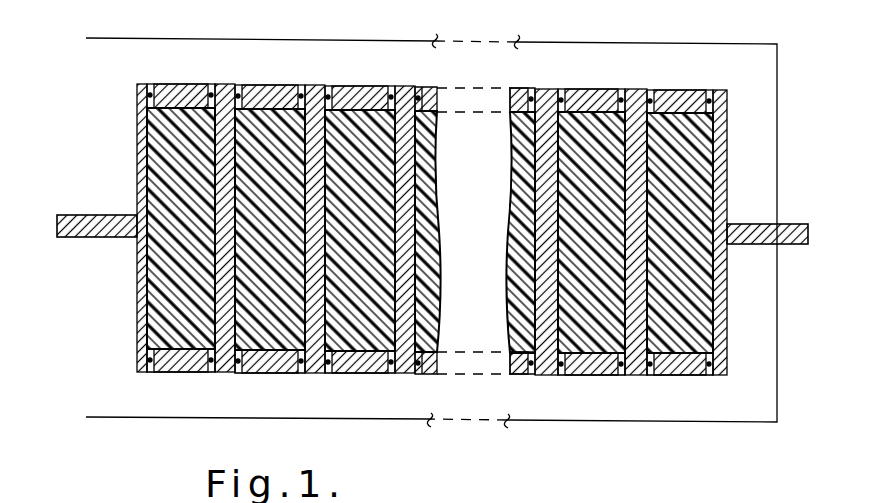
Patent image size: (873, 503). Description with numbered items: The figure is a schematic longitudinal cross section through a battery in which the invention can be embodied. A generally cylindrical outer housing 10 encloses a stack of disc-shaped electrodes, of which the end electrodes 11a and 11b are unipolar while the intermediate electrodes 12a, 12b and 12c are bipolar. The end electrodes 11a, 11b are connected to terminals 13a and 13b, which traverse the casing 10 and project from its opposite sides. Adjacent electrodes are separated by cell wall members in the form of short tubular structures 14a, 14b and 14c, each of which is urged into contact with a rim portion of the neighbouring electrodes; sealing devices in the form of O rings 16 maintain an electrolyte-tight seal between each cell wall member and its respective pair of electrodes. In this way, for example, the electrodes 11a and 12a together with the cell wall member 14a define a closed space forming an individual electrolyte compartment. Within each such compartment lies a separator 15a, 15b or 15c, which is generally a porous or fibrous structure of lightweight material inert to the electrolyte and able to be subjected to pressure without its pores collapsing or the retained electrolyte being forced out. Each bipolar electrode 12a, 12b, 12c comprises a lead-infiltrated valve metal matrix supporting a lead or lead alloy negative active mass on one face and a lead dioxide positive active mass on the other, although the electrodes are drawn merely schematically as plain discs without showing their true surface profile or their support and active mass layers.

The outer housing 10 is at (83, 394).
The end electrode 11a is at (143, 84).
The end electrode 11b is at (727, 90).
The intermediate electrode 12a is at (226, 84).
The intermediate electrode 12b is at (315, 85).
The intermediate electrode 12c is at (403, 86).
The terminal 13a is at (72, 238).
The terminal 13b is at (798, 245).
The cell wall member 14a is at (185, 84).
The cell wall member 14b is at (277, 85).
The cell wall member 14c is at (350, 86).
The separator 15a is at (175, 338).
The separator 15b is at (265, 374).
The separator 15c is at (350, 375).
The O ring 16 is at (624, 89).